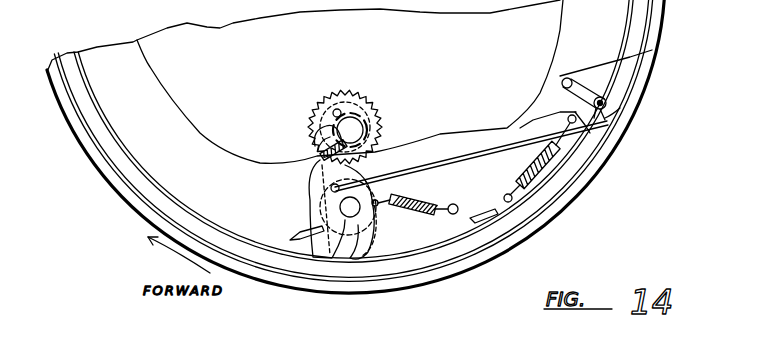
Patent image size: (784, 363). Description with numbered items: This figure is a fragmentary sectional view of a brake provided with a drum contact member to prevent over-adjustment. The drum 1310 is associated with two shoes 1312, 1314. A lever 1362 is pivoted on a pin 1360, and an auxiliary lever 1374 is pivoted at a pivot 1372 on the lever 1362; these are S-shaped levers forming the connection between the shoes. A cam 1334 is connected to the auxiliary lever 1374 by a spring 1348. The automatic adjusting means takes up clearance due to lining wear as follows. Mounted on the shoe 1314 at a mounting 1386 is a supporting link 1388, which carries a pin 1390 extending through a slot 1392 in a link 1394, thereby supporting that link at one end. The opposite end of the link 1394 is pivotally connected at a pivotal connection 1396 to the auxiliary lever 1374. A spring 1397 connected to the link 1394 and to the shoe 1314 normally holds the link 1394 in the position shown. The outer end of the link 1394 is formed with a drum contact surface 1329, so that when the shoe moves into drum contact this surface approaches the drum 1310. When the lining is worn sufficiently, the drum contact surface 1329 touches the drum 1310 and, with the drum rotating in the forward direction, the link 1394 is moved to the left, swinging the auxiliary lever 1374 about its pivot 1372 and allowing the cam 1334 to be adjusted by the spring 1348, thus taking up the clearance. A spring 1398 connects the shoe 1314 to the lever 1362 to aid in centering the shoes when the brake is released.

The drum 1310 is at (636, 84).
The shoe 1312 is at (134, 138).
The shoe 1314 is at (615, 14).
The drum contact surface 1329 is at (608, 104).
The cam 1334 is at (352, 100).
The spring 1348 is at (317, 152).
The pin 1360 is at (357, 129).
The lever 1362 is at (357, 170).
The pivot 1372 is at (350, 222).
The auxiliary lever 1374 is at (330, 205).
The mounting 1386 is at (652, 50).
The supporting link 1388 is at (605, 80).
The pin 1390 is at (630, 118).
The slot 1392 is at (615, 136).
The link 1394 is at (585, 147).
The pivotal connection 1396 is at (331, 188).
The spring 1397 is at (548, 180).
The spring 1398 is at (455, 214).